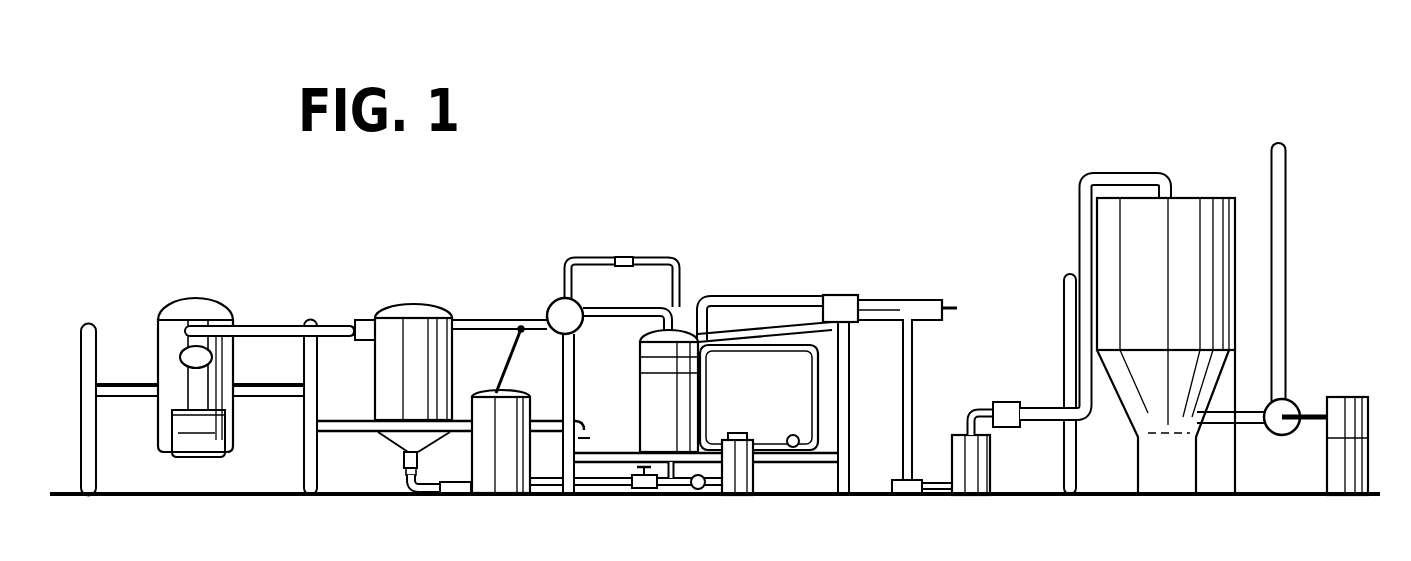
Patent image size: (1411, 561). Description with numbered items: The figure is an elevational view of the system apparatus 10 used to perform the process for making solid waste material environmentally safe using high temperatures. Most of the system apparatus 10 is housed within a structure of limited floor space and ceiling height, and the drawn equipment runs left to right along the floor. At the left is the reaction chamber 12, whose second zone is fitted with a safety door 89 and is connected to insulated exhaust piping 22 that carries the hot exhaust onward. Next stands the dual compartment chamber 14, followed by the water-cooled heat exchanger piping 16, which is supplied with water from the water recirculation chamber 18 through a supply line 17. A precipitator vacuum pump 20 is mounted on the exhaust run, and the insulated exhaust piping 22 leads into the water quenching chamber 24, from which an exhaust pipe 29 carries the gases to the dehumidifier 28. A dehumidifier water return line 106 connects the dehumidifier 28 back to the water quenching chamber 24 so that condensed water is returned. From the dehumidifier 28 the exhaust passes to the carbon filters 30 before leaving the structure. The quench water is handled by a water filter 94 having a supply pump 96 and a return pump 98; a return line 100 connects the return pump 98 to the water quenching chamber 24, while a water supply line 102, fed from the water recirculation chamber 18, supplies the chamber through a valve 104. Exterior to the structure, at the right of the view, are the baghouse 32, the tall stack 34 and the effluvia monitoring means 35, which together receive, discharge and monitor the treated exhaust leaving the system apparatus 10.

The system apparatus 10 is at (707, 162).
The reaction chamber 12 is at (189, 306).
The dual compartment chamber 14 is at (399, 311).
The water-cooled heat exchanger piping 16 is at (494, 327).
The supply line 17 is at (516, 347).
The water recirculation chamber 18 is at (490, 390).
The precipitator vacuum pump 20 is at (560, 310).
The insulated exhaust piping 22 is at (279, 328).
The water quenching chamber 24 is at (688, 391).
The dehumidifier 28 is at (845, 308).
The exhaust pipe 29 is at (758, 301).
The carbon filters 30 is at (967, 434).
The baghouse 32 is at (1183, 206).
The stack 34 is at (1288, 192).
The effluvia monitoring means 35 is at (1337, 403).
The safety door 89 is at (205, 355).
The water filter 94 is at (731, 433).
The supply pump 96 is at (701, 488).
The return pump 98 is at (792, 435).
The return line 100 is at (816, 371).
The water supply line 102 is at (600, 487).
The valve 104 is at (644, 487).
The dehumidifier water return line 106 is at (789, 331).